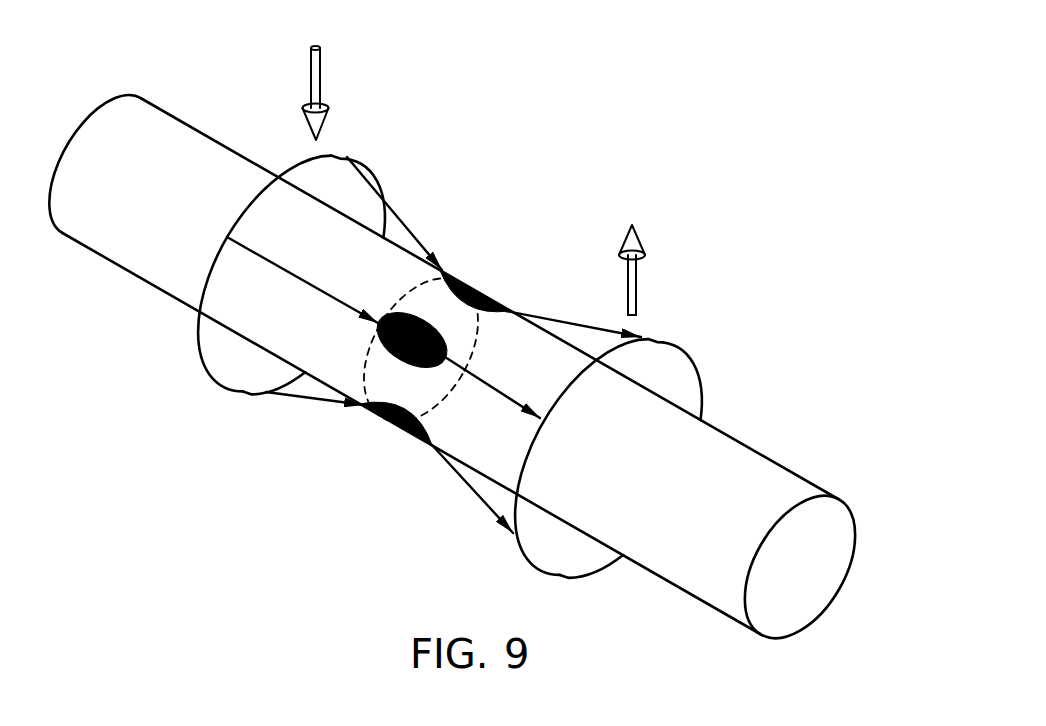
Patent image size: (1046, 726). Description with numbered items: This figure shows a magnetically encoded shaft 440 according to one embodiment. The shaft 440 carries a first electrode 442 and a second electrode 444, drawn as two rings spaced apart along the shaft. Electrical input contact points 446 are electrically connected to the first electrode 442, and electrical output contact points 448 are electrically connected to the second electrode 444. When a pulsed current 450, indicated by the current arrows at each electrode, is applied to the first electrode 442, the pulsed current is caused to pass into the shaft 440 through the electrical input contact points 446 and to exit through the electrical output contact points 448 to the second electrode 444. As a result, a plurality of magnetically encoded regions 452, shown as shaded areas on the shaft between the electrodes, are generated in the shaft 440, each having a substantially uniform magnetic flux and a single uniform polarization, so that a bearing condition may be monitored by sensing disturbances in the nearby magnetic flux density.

The shaft 440 is at (168, 143).
The first electrode 442 is at (300, 170).
The second electrode 444 is at (697, 380).
The electrical input contact points 446 is at (444, 272).
The electrical output contact points 448 is at (513, 312).
The pulsed current 450 is at (320, 92).
The magnetically encoded regions 452 is at (475, 290).